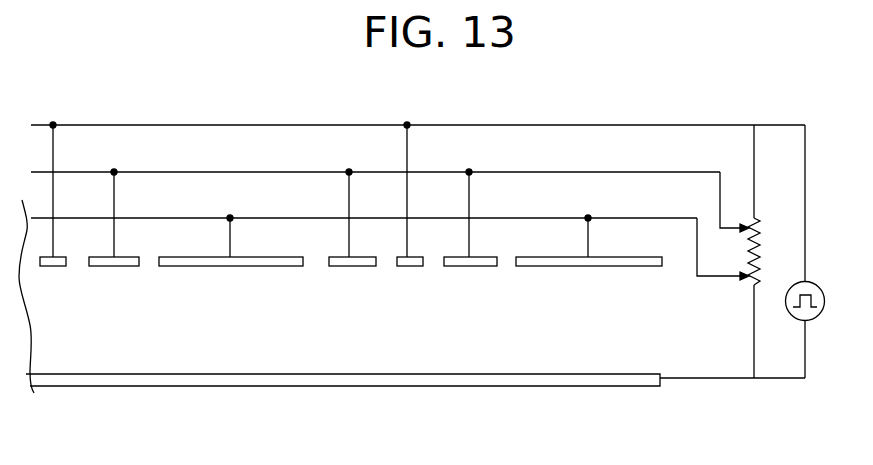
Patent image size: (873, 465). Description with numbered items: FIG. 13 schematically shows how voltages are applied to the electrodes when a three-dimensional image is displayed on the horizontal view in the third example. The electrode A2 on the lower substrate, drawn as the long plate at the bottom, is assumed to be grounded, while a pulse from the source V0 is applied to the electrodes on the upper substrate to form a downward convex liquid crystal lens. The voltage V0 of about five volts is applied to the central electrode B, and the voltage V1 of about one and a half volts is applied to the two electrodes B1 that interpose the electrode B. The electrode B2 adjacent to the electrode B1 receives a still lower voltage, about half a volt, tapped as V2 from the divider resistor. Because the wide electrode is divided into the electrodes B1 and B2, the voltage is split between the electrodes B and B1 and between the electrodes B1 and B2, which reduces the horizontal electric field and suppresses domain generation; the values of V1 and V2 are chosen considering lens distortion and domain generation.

The electrode B2 is at (243, 266).
The electrode B1 is at (356, 266).
The electrode B is at (413, 266).
The electrode A2 is at (170, 386).
The voltage V1 is at (732, 214).
The voltage V2 is at (723, 262).
The voltage V0 is at (813, 290).